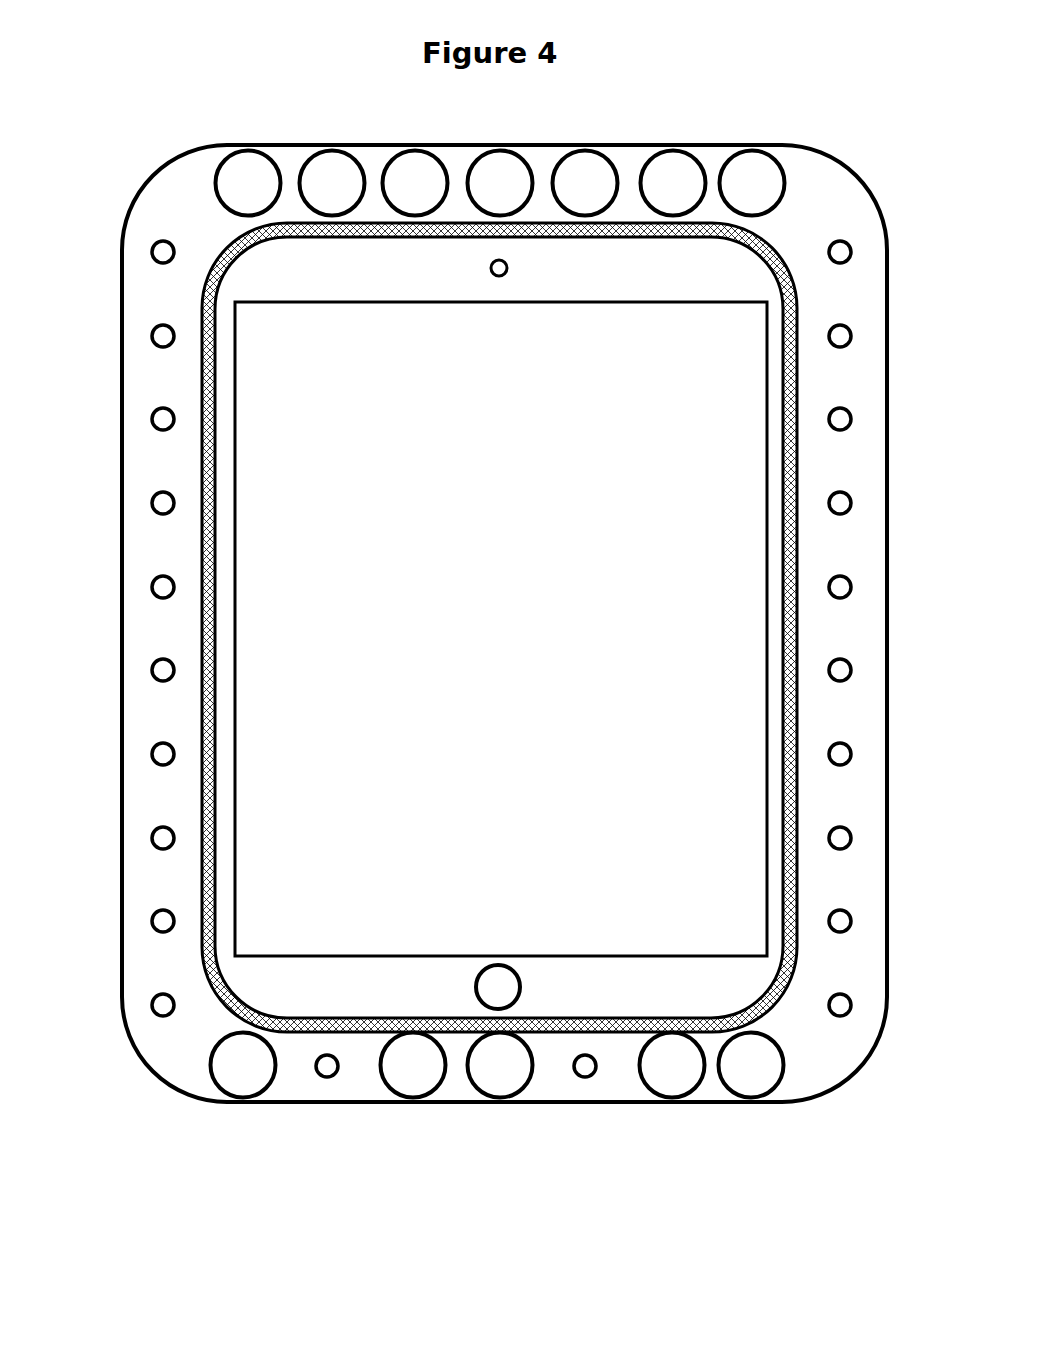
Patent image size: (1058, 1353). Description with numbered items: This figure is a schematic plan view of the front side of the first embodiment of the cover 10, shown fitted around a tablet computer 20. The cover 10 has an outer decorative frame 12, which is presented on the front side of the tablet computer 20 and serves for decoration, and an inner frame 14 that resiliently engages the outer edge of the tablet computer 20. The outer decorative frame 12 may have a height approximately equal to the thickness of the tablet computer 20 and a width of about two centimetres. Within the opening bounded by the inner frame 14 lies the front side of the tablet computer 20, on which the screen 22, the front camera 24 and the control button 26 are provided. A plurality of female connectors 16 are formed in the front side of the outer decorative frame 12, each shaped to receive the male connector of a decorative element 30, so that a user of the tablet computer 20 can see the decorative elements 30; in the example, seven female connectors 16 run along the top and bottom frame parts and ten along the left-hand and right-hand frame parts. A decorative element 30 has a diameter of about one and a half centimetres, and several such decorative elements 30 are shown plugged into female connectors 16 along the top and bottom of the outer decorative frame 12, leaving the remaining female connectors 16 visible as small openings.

The cover 10 is at (163, 157).
The outer decorative frame 12 is at (248, 145).
The inner frame 14 is at (797, 350).
The female connectors 16 is at (165, 320).
The tablet computer 20 is at (725, 287).
The screen 22 is at (605, 303).
The front camera 24 is at (503, 260).
The control button 26 is at (517, 982).
The decorative element 30 is at (420, 148).